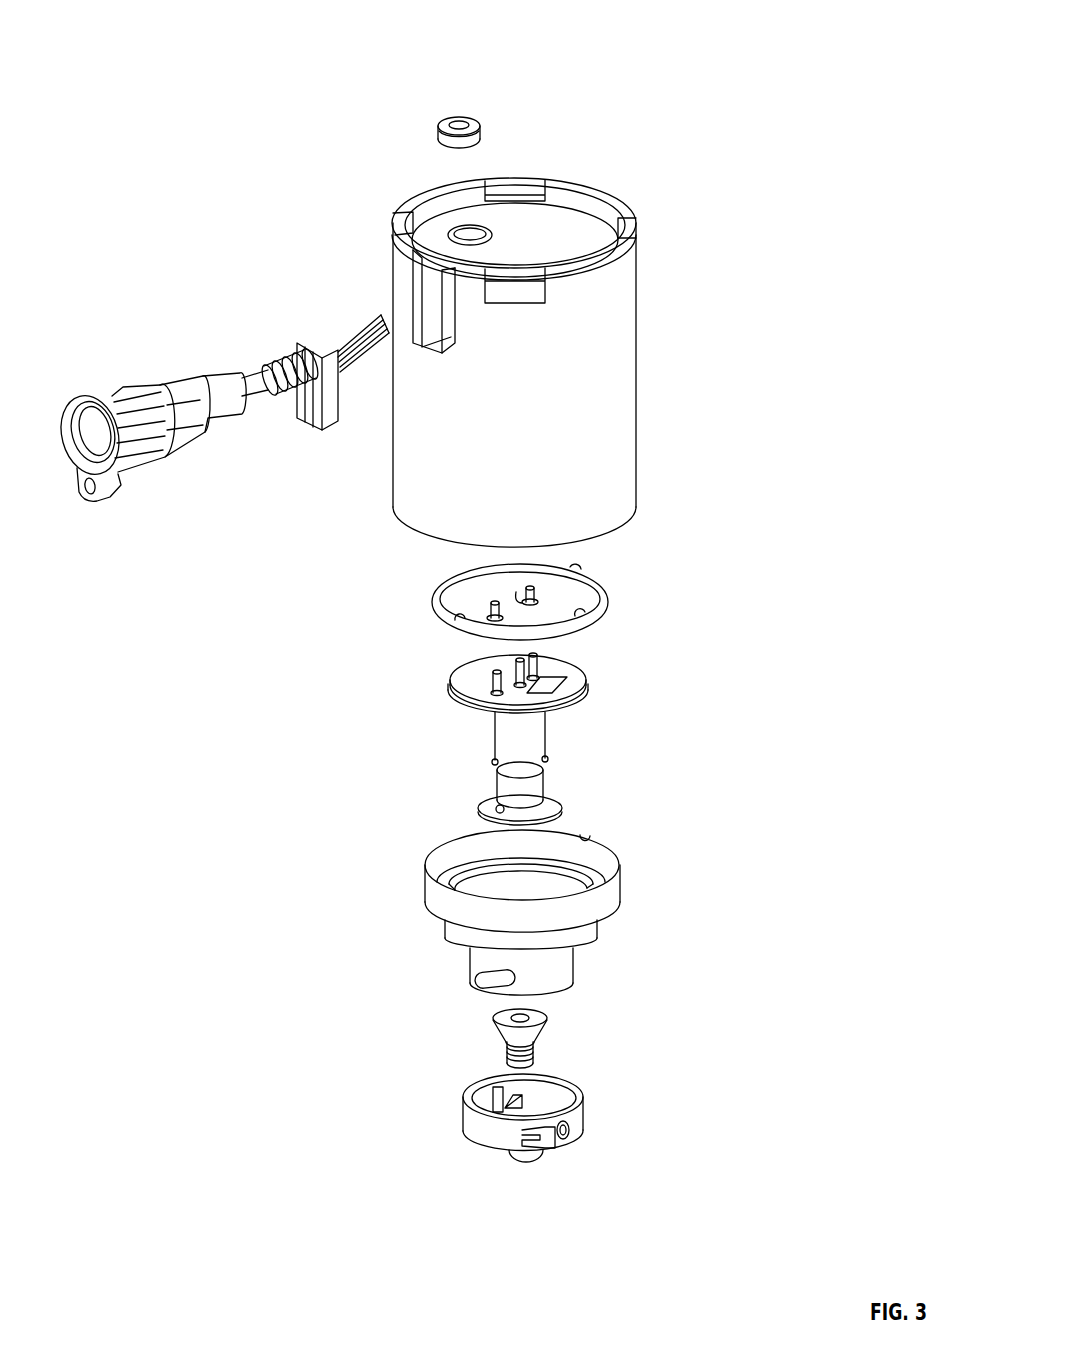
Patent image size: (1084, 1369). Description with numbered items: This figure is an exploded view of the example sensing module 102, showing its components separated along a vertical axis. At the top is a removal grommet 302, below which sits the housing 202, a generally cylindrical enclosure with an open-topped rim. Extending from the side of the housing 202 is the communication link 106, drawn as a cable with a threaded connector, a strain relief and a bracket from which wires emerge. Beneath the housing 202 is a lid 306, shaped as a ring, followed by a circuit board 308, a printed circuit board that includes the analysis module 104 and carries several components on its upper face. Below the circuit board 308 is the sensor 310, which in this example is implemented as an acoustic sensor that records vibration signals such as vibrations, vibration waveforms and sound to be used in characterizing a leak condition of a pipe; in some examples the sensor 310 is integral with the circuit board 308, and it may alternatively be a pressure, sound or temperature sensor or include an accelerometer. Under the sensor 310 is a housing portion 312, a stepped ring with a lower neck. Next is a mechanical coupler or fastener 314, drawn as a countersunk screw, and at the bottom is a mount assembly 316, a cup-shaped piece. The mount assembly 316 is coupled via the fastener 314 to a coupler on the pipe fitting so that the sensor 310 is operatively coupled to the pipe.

The sensing module 102 is at (678, 45).
The analysis module 104 is at (588, 680).
The communication link 106 is at (252, 373).
The housing 202 is at (639, 358).
The removal grommet 302 is at (470, 118).
The lid 306 is at (585, 628).
The circuit board 308 is at (577, 708).
The sensor 310 is at (548, 782).
The housing portion 312 is at (622, 884).
The fastener 314 is at (552, 1020).
The mount assembly 316 is at (583, 1116).